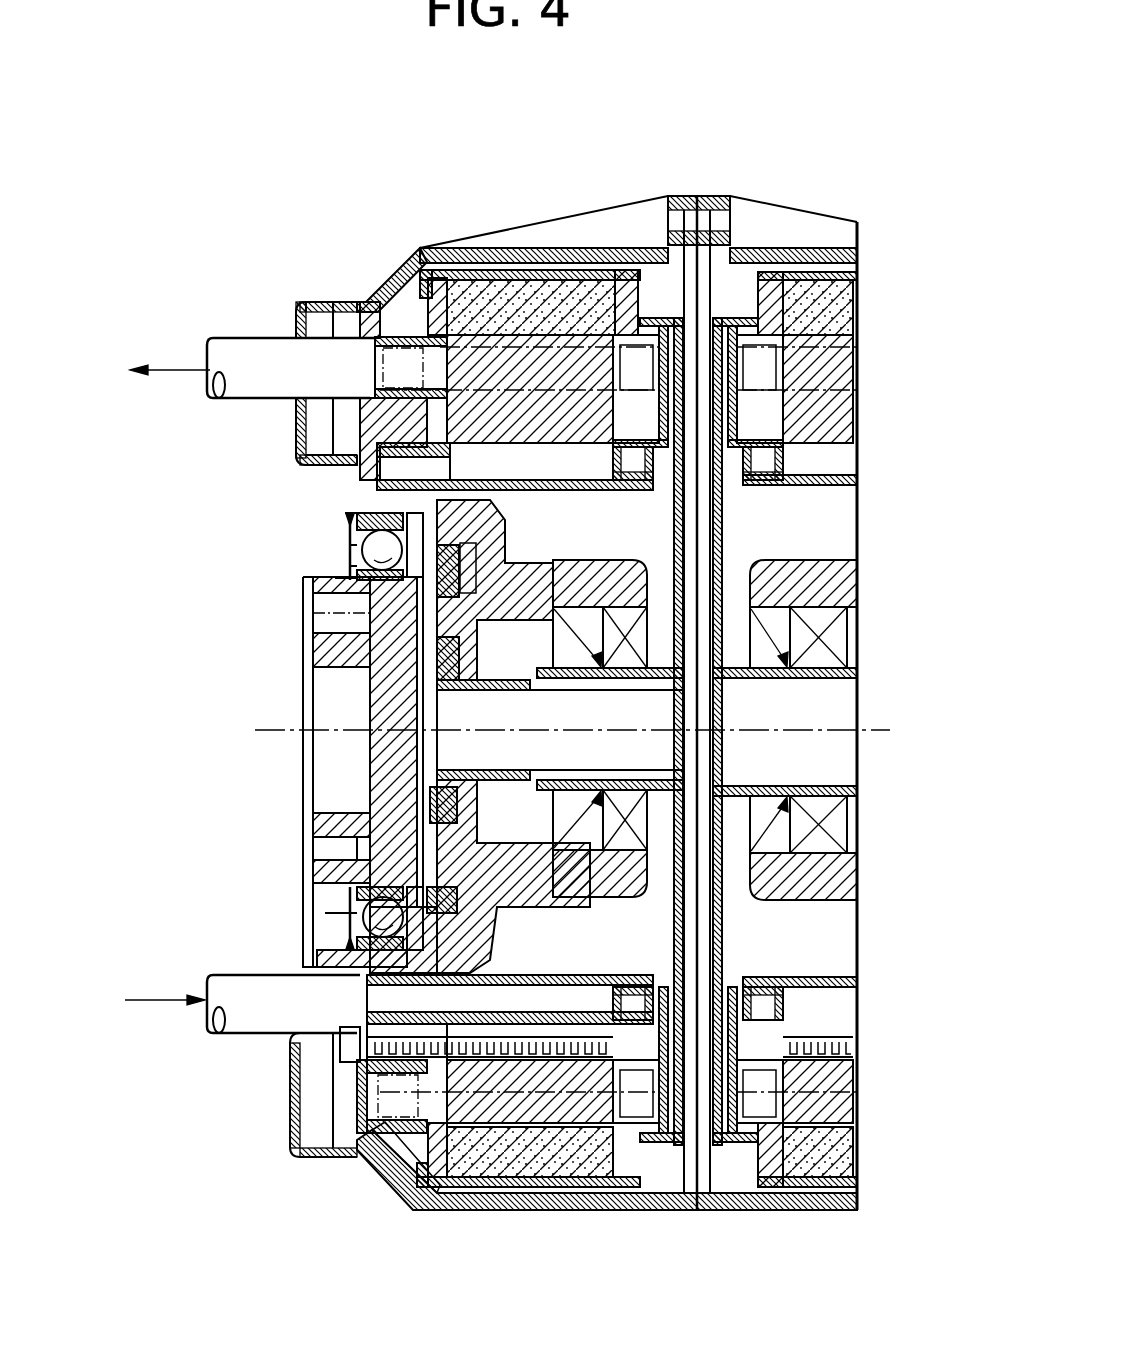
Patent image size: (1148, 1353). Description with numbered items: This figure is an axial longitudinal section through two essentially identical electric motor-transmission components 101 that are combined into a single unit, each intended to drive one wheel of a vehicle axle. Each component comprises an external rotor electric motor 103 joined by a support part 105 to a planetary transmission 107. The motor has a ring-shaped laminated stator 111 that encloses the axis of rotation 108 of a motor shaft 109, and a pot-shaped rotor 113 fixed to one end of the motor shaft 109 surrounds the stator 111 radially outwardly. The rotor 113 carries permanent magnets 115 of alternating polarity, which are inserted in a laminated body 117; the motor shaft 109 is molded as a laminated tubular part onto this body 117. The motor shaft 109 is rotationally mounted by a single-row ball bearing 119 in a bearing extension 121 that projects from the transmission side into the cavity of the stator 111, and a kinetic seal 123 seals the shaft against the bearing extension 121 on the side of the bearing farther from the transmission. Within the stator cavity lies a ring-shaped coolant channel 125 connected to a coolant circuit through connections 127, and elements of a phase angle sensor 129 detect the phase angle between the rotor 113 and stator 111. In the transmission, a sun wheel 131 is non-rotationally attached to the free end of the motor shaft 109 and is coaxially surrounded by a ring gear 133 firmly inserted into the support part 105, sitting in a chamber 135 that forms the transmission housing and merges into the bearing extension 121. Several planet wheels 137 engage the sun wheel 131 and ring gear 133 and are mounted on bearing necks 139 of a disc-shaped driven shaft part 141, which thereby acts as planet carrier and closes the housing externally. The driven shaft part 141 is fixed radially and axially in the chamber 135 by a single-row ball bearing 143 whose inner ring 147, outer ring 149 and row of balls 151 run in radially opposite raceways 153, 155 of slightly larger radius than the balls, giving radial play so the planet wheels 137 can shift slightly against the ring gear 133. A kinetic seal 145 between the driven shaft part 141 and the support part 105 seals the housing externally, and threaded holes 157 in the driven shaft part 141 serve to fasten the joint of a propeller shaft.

The electric motor-transmission component 101 is at (492, 226).
The external rotor electric motor 103 is at (530, 1160).
The support part 105 is at (368, 1188).
The planetary transmission 107 is at (290, 629).
The axis of rotation 108 is at (275, 742).
The motor shaft 109 is at (512, 690).
The stator 111 is at (472, 373).
The rotor 113 is at (660, 313).
The permanent magnets 115 is at (581, 300).
The laminated body 117 is at (676, 540).
The ball bearing 119 is at (568, 613).
The bearing extension 121 is at (557, 890).
The kinetic seal 123 is at (608, 880).
The ring-shaped channel 125 is at (627, 462).
The connections 127 is at (265, 362).
The phase angle sensor 129 is at (695, 1070).
The sun wheel 131 is at (325, 690).
The ring gear 133 is at (345, 518).
The chamber 135 is at (340, 960).
The planet wheels 137 is at (325, 657).
The bearing necks 139 is at (325, 605).
The driven shaft part 141 is at (303, 820).
The ball bearing 143 is at (345, 925).
The kinetic seal 145 is at (320, 913).
The inner ring 147 is at (350, 525).
The outer ring 149 is at (335, 578).
The balls 151 is at (325, 913).
The raceway 153 is at (352, 545).
The raceway 155 is at (352, 566).
The threaded holes 157 is at (317, 853).